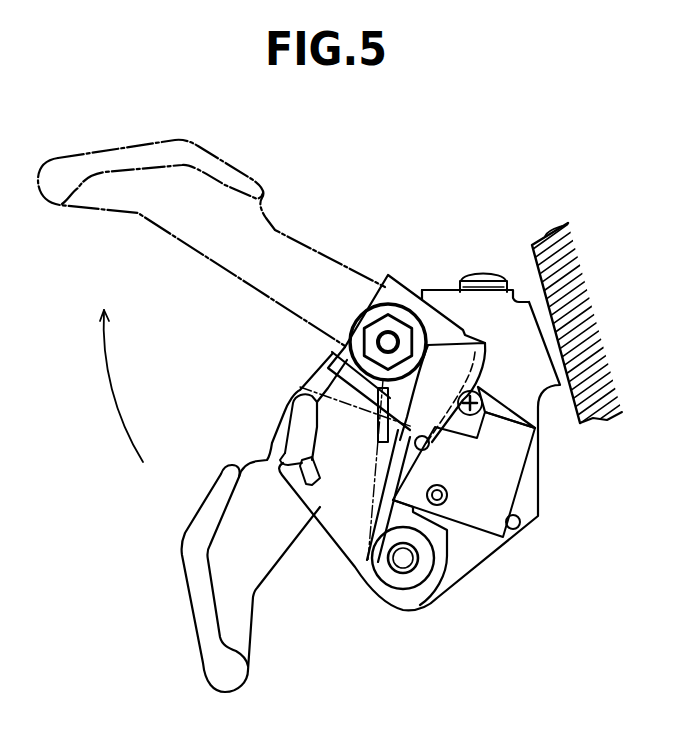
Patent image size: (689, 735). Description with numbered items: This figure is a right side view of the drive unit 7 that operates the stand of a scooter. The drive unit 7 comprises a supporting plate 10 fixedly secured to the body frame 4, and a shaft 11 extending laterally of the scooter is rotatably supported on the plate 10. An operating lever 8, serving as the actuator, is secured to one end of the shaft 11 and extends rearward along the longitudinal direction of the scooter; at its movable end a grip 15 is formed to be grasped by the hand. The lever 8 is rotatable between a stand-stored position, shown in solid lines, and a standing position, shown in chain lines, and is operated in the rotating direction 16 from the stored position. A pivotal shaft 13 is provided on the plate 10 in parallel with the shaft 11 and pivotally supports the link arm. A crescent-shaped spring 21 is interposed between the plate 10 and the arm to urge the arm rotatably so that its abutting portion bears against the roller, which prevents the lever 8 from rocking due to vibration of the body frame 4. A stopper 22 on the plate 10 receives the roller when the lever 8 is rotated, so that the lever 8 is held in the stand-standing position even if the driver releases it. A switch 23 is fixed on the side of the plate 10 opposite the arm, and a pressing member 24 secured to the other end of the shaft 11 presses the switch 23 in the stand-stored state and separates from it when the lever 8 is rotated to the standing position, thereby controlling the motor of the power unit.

The body frame 4 is at (570, 408).
The drive unit 7 is at (488, 262).
The operating lever 8 is at (290, 236).
The supporting plate 10 is at (342, 542).
The shaft 11 is at (388, 340).
The pivotal shaft 13 is at (410, 580).
The grip 15 is at (118, 147).
The rotating direction 16 is at (103, 345).
The crescent-shaped spring 21 is at (318, 477).
The stopper 22 is at (285, 413).
The switch 23 is at (507, 493).
The pressing member 24 is at (378, 407).